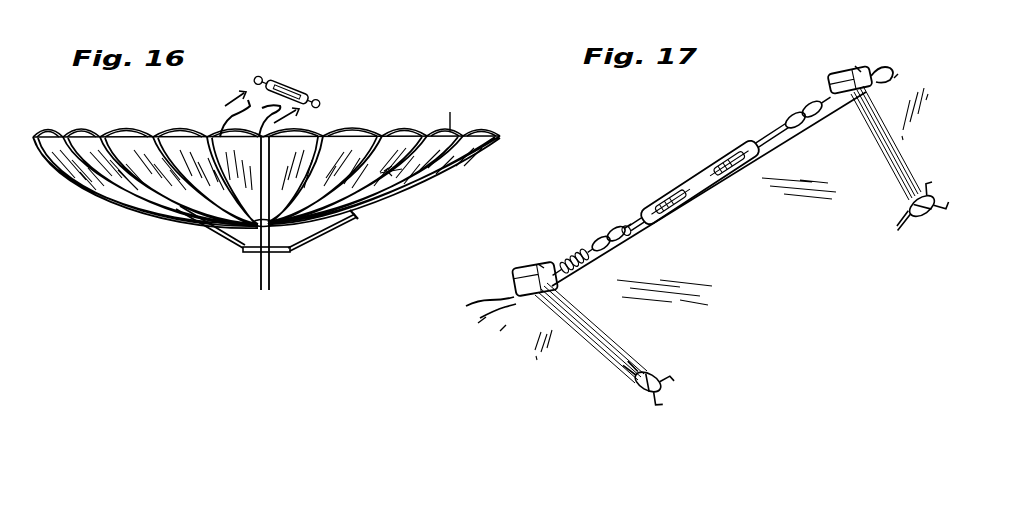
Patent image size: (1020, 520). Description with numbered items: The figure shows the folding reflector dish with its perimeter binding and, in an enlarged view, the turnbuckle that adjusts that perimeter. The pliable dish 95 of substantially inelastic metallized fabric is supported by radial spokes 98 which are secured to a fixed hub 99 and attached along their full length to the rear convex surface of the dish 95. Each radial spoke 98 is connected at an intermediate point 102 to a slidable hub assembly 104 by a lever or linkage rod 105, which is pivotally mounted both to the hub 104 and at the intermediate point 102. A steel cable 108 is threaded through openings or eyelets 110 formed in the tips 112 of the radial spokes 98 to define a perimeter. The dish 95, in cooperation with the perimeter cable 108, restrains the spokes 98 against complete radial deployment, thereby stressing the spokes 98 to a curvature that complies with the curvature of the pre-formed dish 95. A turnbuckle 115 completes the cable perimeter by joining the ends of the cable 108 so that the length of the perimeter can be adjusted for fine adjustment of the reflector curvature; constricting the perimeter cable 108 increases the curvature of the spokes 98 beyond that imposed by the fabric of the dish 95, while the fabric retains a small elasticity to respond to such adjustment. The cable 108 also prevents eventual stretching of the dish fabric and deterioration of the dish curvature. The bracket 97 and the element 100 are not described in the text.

In FIG. 16, the dish 95 is at (465, 110).
In FIG. 17, the dish 95 is at (756, 247).
In FIG. 17, the anchor bracket 97 is at (670, 368).
In FIG. 17, the radial spokes 98 is at (541, 252).
In FIG. 16, the fixed hub 99 is at (235, 244).
In FIG. 16, the center post 100 is at (269, 290).
In FIG. 16, the intermediate point 102 is at (357, 217).
In FIG. 16, the slidable hub assembly 104 is at (290, 252).
In FIG. 16, the linkage rod 105 is at (314, 242).
In FIG. 16, the steel cable 108 is at (350, 130).
In FIG. 17, the steel cable 108 is at (488, 301).
In FIG. 17, the eyelets 110 is at (520, 275).
In FIG. 17, the tips 112 is at (546, 260).
In FIG. 16, the turnbuckle 115 is at (292, 82).
In FIG. 17, the turnbuckle 115 is at (694, 175).